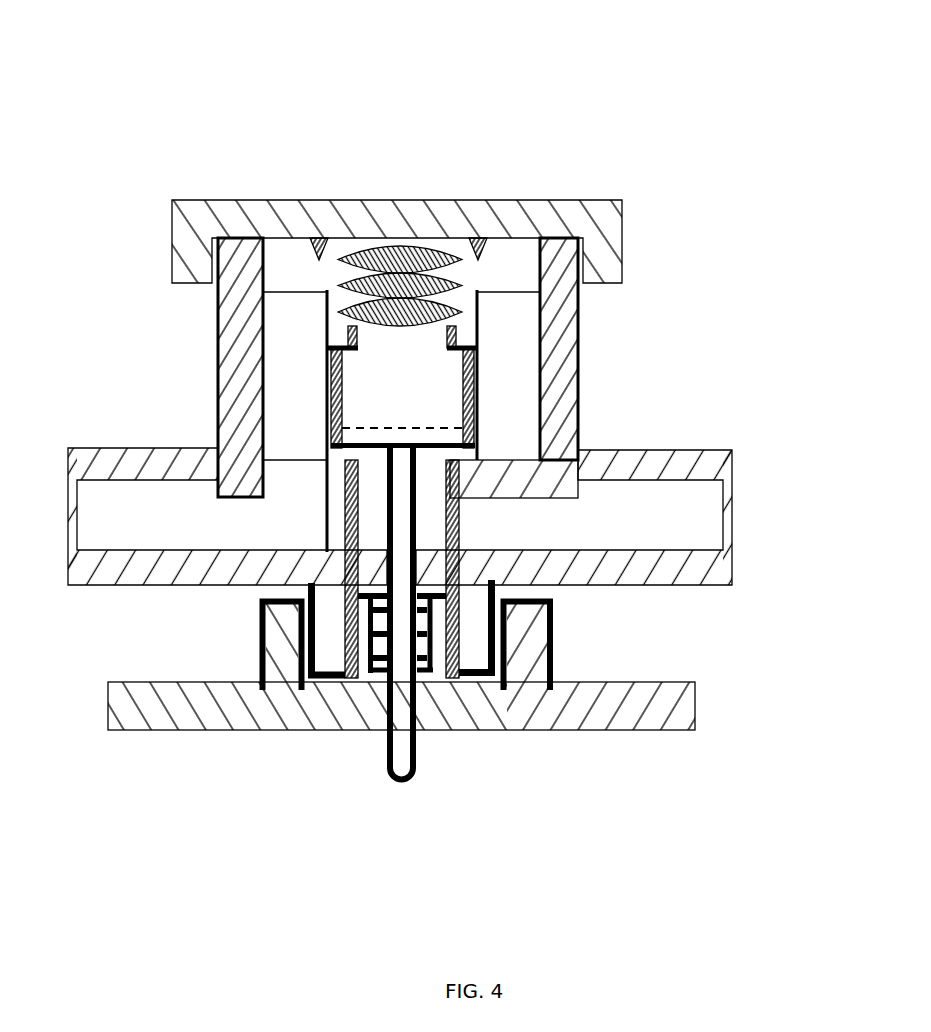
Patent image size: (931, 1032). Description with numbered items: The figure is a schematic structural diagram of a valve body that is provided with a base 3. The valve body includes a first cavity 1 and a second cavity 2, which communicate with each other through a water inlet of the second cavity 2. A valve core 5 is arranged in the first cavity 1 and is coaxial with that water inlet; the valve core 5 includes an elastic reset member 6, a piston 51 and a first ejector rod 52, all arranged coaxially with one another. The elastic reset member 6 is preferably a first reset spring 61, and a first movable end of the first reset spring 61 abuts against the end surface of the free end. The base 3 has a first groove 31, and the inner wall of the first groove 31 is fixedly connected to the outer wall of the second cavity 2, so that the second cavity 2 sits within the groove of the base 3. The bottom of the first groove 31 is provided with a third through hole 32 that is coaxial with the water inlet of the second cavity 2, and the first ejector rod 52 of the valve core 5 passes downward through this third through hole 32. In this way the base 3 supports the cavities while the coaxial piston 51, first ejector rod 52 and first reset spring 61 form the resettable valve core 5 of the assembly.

The first cavity 1 is at (292, 275).
The second cavity 2 is at (493, 530).
The base 3 is at (493, 710).
The first groove 31 is at (303, 622).
The third through hole 32 is at (395, 712).
The valve core 5 is at (597, 460).
The piston 51 is at (422, 377).
The first ejector rod 52 is at (410, 543).
The elastic reset member 6 is at (553, 201).
The first reset spring 61 is at (405, 277).